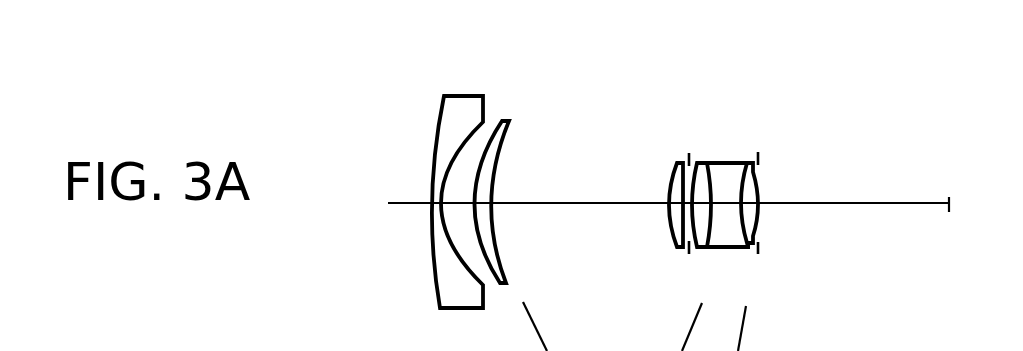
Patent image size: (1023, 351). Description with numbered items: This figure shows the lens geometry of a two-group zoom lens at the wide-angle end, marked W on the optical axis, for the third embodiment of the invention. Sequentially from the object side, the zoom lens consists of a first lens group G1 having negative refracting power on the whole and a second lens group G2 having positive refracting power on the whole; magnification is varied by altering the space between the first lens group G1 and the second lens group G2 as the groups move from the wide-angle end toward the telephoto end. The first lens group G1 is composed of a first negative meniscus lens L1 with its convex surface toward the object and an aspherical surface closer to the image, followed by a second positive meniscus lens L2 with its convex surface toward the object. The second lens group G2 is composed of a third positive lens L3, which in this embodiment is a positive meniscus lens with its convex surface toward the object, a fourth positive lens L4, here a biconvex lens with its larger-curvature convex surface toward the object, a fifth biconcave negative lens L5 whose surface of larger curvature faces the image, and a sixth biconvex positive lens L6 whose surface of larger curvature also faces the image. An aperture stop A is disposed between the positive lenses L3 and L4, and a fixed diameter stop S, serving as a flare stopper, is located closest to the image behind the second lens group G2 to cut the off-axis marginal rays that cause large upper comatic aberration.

The first lens group G1 is at (547, 43).
The second lens group G2 is at (795, 72).
The first negative meniscus lens L1 is at (463, 110).
The second positive meniscus lens L2 is at (507, 118).
The third positive lens L3 is at (678, 162).
The fourth positive lens L4 is at (703, 156).
The fifth biconcave negative lens L5 is at (727, 170).
The sixth biconvex positive lens L6 is at (753, 160).
The aperture stop A is at (689, 164).
The fixed diameter stop S is at (758, 165).
The wide-angle end position W is at (699, 203).